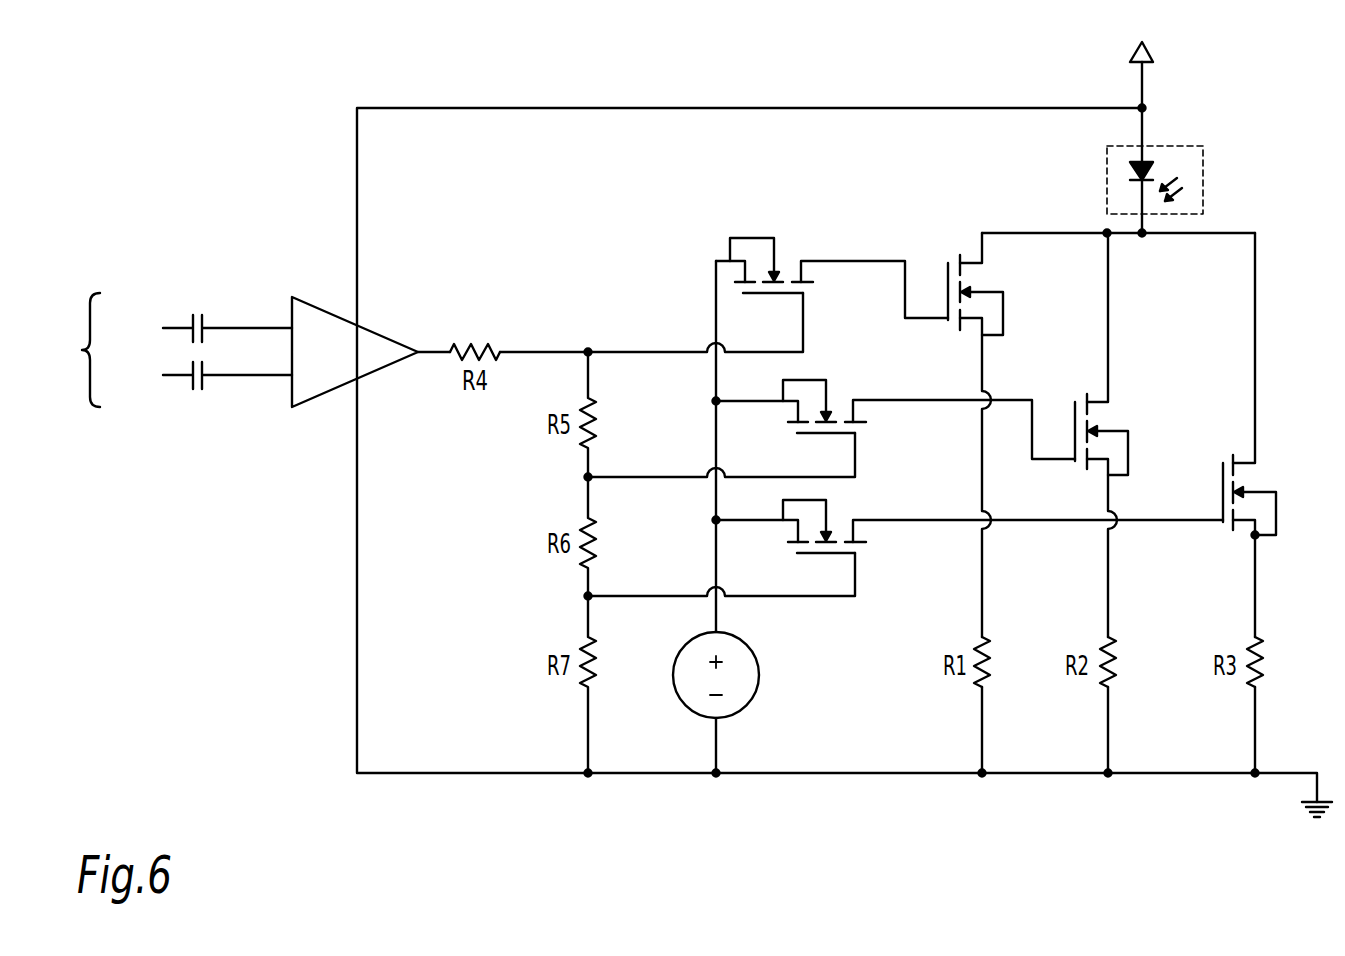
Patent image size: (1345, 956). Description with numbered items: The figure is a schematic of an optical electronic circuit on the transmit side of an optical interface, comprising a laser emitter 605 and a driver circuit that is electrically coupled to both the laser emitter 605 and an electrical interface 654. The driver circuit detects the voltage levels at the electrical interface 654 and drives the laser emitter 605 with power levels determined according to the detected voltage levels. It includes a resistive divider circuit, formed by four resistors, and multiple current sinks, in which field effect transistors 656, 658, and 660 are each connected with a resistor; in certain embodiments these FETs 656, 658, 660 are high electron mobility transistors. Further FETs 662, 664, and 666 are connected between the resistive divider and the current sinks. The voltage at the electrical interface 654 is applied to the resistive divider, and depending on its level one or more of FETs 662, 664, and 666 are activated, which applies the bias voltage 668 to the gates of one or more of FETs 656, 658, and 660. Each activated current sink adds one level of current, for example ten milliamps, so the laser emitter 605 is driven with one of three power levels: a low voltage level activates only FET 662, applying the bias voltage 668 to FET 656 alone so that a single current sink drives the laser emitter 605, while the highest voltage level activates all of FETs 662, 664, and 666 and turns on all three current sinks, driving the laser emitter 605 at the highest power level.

The laser emitter 605 is at (1204, 158).
The electrical interface 654 is at (82, 350).
The field effect transistor 656 is at (970, 286).
The field effect transistor 658 is at (1097, 421).
The field effect transistor 660 is at (1244, 483).
The field effect transistor 662 is at (788, 265).
The field effect transistor 664 is at (838, 410).
The field effect transistor 666 is at (841, 528).
The bias voltage 668 is at (760, 675).